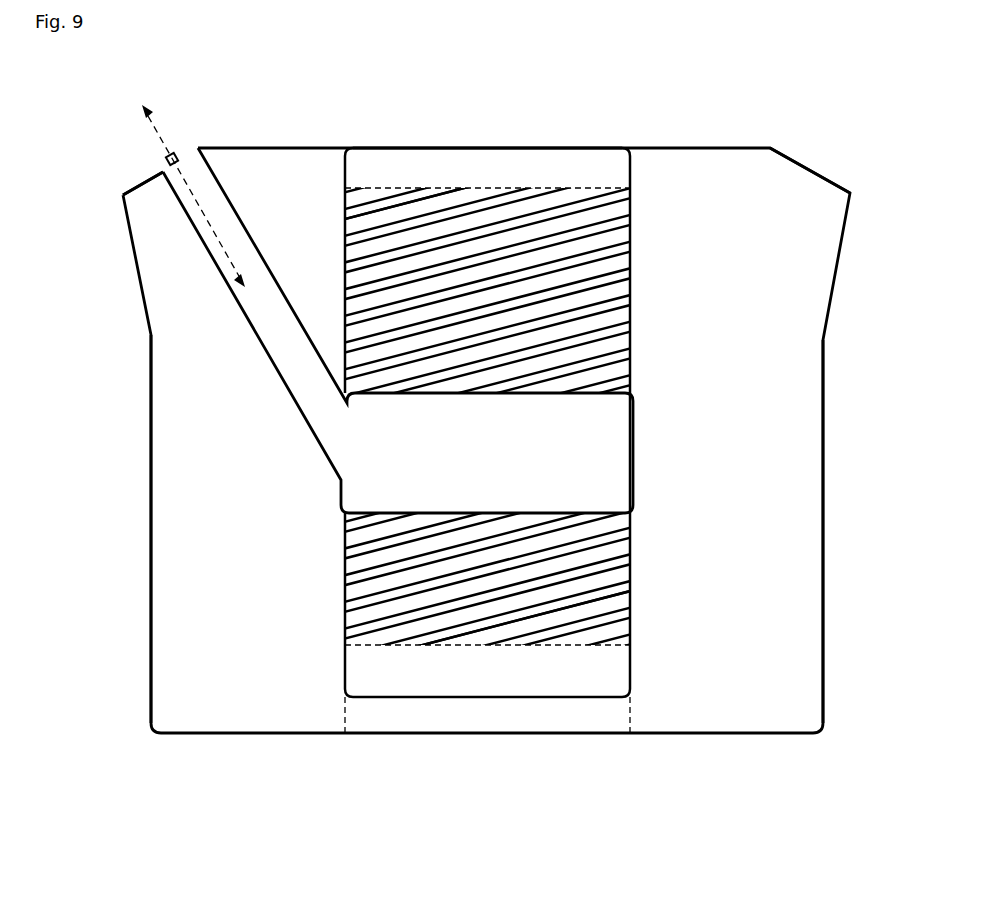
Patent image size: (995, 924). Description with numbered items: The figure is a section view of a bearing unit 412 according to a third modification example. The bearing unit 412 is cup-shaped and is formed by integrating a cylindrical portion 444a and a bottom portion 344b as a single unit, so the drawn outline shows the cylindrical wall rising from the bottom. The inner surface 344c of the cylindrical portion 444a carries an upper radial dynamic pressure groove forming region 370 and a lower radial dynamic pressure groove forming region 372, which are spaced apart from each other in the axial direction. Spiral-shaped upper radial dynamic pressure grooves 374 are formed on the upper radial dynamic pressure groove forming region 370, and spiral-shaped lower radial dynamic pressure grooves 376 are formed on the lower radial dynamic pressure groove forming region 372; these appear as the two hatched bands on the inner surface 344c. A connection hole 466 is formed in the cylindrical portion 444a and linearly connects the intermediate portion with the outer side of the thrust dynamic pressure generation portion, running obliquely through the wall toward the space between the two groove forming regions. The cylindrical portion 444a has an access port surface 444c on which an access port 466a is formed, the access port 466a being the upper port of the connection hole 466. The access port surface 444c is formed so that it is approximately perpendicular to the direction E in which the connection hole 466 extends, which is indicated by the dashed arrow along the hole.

The bearing unit 412 is at (512, 843).
The cylindrical portion 444a is at (277, 242).
The access port surface 444c is at (133, 183).
The bottom portion 344b is at (393, 717).
The inner surface 344c is at (593, 173).
The upper radial dynamic pressure groove forming region 370 is at (641, 188).
The lower radial dynamic pressure groove forming region 372 is at (641, 513).
The upper radial dynamic pressure grooves 374 is at (503, 193).
The lower radial dynamic pressure grooves 376 is at (582, 630).
The connection hole 466 is at (273, 337).
The access port 466a is at (178, 153).
The direction E is at (158, 127).